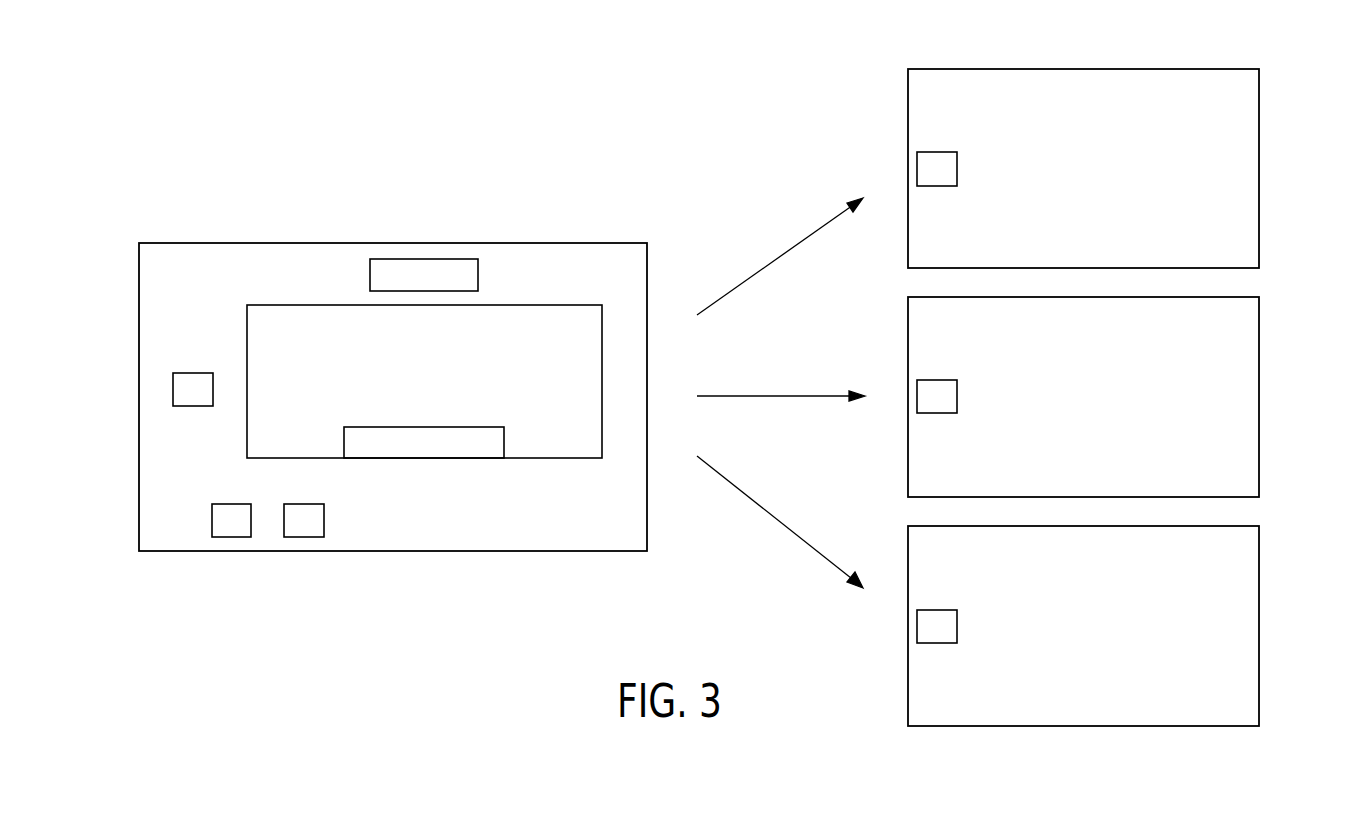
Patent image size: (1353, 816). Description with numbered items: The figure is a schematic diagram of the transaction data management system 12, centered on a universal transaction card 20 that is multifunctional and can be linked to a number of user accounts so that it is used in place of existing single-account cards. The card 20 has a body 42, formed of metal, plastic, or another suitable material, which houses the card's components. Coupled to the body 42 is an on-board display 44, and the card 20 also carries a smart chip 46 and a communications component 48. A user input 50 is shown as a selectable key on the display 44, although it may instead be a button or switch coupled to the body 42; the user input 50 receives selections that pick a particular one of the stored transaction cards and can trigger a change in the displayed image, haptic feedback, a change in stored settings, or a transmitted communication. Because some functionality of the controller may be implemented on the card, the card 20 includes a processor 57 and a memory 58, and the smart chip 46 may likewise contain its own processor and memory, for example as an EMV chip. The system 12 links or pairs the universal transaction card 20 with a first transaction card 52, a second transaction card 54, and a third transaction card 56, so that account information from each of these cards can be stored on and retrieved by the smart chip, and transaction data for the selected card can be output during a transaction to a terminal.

The transaction data management system 12 is at (412, 127).
The universal transaction card 20 is at (507, 243).
The body 42 is at (170, 450).
The on-board display 44 is at (520, 305).
The smart chip 46 is at (195, 373).
The communications component 48 is at (370, 278).
The user input 50 is at (423, 427).
The first transaction card 52 is at (1259, 172).
The second transaction card 54 is at (1259, 397).
The third transaction card 56 is at (1259, 626).
The processor 57 is at (303, 504).
The memory 58 is at (230, 504).